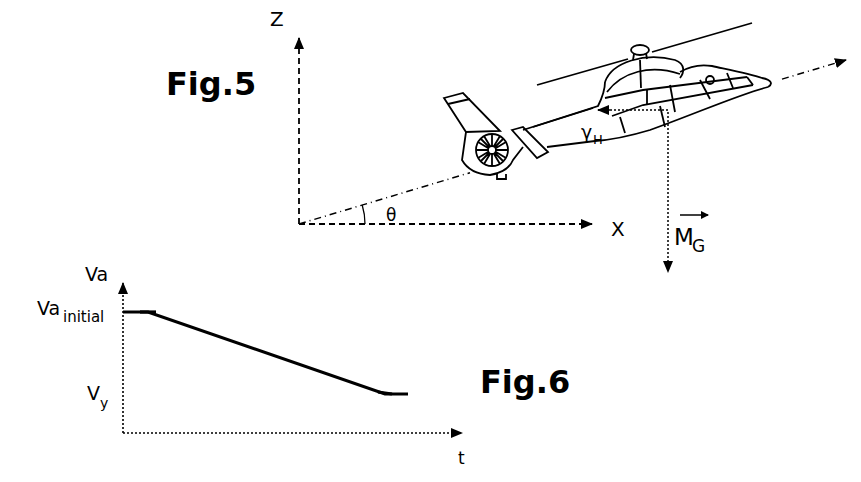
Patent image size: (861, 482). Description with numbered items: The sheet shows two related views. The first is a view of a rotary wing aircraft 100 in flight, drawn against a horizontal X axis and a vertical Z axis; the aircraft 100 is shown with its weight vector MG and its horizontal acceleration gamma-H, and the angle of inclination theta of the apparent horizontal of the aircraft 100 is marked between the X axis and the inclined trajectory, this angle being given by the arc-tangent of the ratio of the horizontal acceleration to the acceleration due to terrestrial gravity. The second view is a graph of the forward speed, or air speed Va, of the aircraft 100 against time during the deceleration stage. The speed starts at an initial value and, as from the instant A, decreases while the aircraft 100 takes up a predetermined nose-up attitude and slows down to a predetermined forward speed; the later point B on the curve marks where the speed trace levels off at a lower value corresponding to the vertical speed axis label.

In FIG. 5, the aircraft 100 is at (553, 117).
In FIG. 6, the instant A is at (147, 304).
In FIG. 6, the end point of airspeed decrease B is at (384, 386).